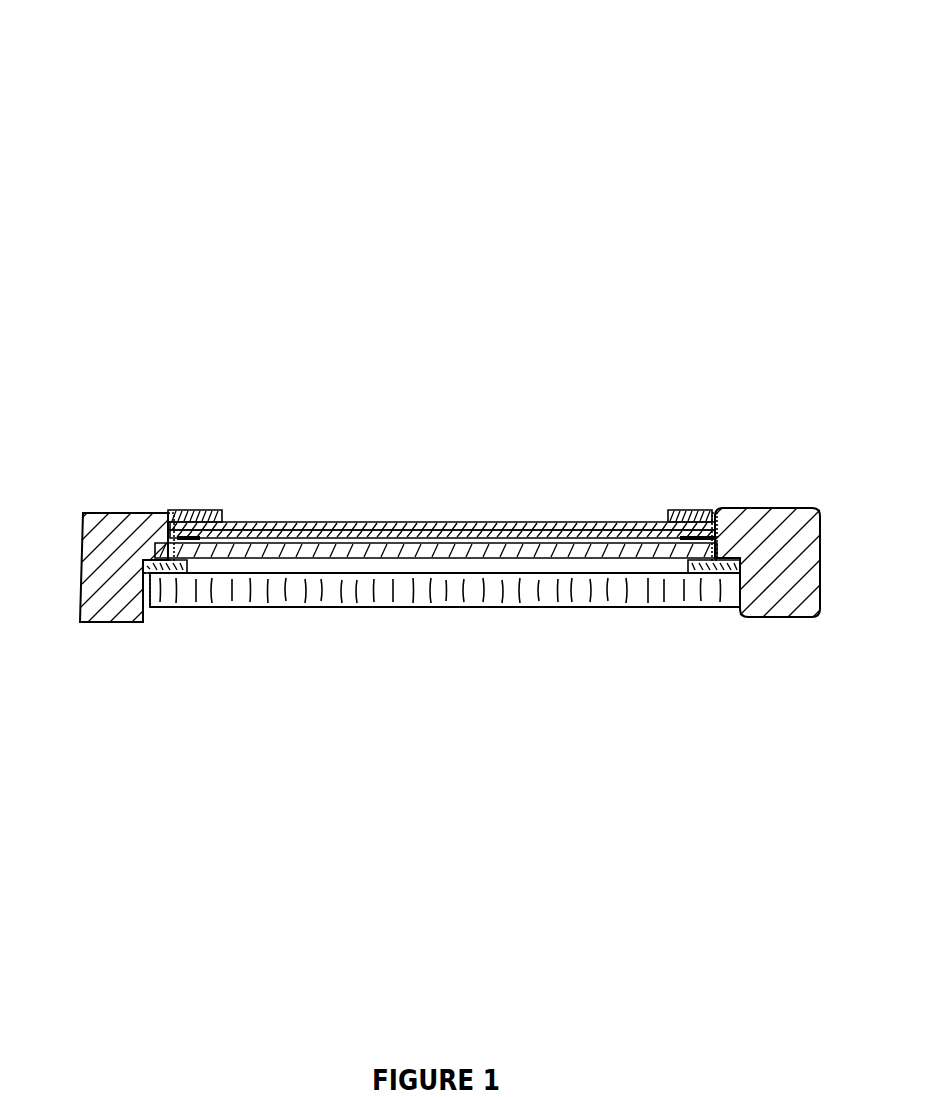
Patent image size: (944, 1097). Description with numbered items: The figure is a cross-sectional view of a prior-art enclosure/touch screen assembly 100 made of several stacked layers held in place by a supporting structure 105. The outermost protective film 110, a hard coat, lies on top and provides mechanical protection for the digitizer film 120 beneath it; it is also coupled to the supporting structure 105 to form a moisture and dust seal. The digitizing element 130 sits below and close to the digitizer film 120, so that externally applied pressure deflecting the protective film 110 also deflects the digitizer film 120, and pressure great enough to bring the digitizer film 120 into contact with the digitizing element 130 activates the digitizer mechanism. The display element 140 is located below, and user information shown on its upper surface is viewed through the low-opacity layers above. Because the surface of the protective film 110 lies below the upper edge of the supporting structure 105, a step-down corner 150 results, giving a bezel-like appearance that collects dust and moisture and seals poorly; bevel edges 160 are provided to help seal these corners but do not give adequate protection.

The enclosure/touch screen assembly 100 is at (92, 53).
The supporting structure 105 is at (88, 513).
The outermost protective film 110 is at (262, 522).
The digitizer film 120 is at (345, 533).
The digitizing element 130 is at (452, 555).
The display element 140 is at (444, 607).
The step-down corner 150 is at (179, 513).
The bevel edges 160 is at (212, 503).